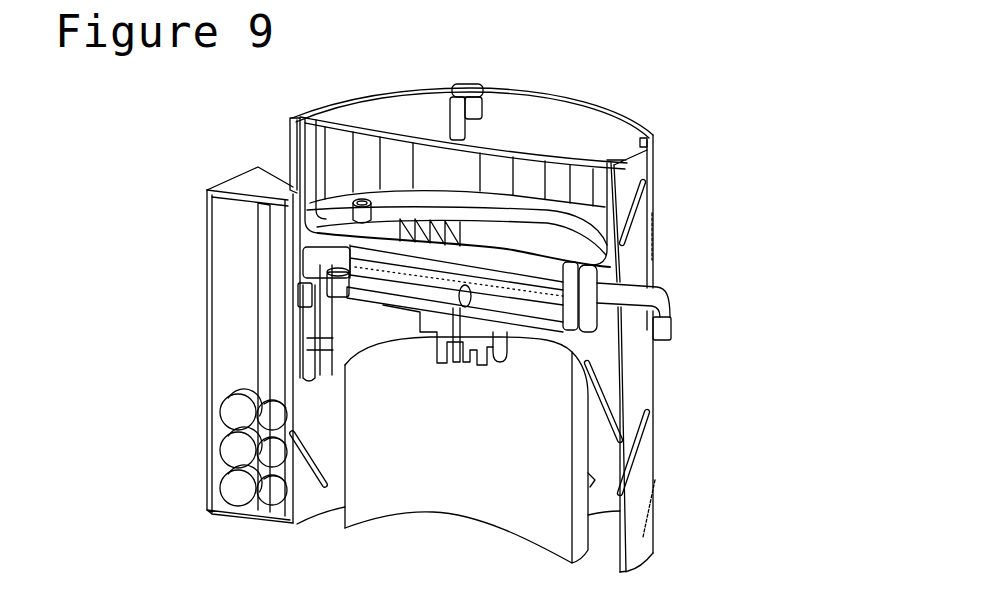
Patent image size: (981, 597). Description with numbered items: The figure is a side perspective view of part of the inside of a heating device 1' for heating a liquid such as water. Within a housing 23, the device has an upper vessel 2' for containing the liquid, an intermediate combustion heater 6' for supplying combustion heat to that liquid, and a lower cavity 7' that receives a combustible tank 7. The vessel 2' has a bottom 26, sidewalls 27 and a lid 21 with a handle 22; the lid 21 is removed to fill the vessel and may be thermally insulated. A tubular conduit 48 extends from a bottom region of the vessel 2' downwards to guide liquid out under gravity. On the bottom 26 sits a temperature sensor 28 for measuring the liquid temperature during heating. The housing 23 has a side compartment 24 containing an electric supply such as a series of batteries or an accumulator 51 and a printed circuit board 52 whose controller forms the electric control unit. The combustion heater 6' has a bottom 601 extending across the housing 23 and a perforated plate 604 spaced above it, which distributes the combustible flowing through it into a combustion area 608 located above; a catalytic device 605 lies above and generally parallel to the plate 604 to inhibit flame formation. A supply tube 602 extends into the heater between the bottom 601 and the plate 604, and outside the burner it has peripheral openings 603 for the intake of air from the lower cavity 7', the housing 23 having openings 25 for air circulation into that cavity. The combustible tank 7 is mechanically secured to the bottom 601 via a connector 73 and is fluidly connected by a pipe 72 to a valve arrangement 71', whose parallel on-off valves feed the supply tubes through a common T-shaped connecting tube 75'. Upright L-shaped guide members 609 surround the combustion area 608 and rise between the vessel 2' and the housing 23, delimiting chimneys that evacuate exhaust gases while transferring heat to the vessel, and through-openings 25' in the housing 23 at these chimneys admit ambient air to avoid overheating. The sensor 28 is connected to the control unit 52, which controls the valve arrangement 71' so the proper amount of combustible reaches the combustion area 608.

The heating device 1' is at (697, 337).
The vessel 2' is at (335, 217).
The lid 21 is at (560, 118).
The handle 22 is at (483, 88).
The housing 23 is at (647, 560).
The side compartment 24 is at (207, 342).
The openings 25 is at (675, 452).
The through-openings 25' is at (683, 212).
The bottom 26 is at (600, 255).
The sidewalls 27 is at (463, 162).
The temperature sensor 28 is at (355, 205).
The tubular conduit 48 is at (673, 322).
The batteries or accumulator 51 is at (230, 412).
The printed circuit board 52 is at (267, 252).
The combustion heater 6' is at (650, 288).
The combustible tank 7 is at (470, 450).
The lower cavity 7' is at (453, 550).
The valve arrangement 71' is at (322, 347).
The pipe 72 is at (424, 265).
The connector 73 is at (440, 345).
The T-shaped connecting tube 75' is at (262, 281).
The bottom 601 is at (552, 334).
The supply tube 602 is at (471, 300).
The peripheral openings 603 is at (345, 298).
The perforated plate 604 is at (545, 294).
The catalytic device 605 is at (512, 280).
The combustion area 608 is at (414, 274).
The L-shaped guide members 609 is at (297, 140).